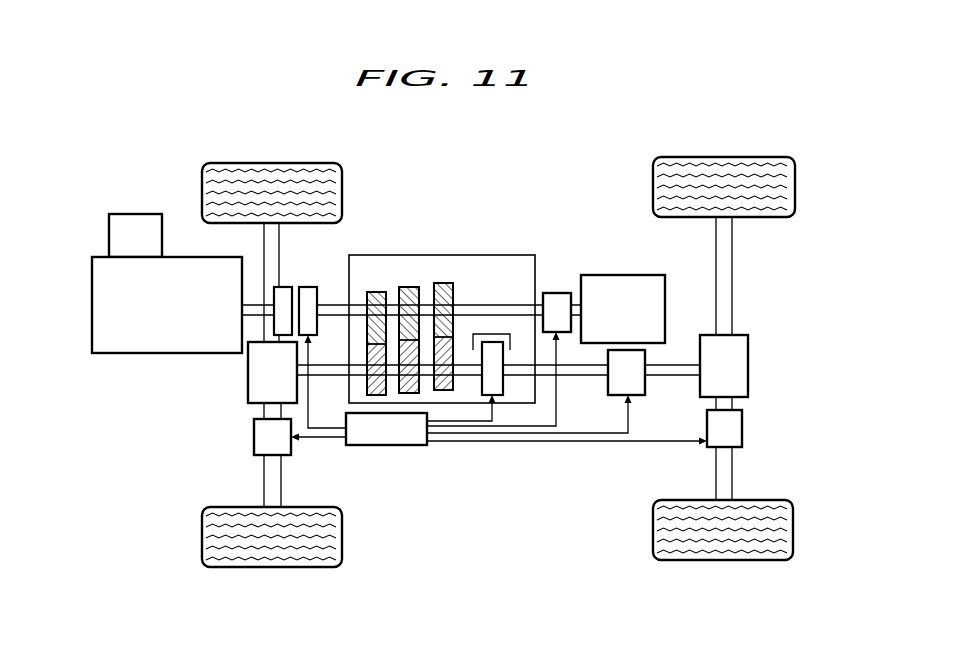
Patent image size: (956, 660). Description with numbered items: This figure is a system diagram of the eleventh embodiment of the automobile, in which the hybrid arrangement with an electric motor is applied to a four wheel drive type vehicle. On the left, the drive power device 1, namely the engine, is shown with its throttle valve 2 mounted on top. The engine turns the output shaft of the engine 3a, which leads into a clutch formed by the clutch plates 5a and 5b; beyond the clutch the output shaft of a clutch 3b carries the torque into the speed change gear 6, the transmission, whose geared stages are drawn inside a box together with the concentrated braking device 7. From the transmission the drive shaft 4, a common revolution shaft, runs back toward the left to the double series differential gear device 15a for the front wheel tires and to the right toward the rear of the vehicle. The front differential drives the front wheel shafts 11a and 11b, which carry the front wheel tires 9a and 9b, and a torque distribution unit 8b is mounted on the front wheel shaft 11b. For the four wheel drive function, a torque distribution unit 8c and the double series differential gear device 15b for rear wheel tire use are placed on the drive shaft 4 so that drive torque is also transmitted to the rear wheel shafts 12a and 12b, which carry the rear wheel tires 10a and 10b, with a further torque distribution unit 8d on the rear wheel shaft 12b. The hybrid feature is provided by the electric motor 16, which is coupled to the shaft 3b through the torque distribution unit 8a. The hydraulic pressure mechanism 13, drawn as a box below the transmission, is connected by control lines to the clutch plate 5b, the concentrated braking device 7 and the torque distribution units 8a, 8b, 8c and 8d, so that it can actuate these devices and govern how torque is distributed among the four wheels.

The drive power device 1 is at (102, 298).
The throttle valve 2 is at (111, 235).
The output shaft of the engine 3a is at (250, 308).
The output shaft of a clutch 3b is at (340, 308).
The drive shaft 4 is at (577, 373).
The clutch plate 5a is at (285, 292).
The clutch plate 5b is at (310, 292).
The speed change gear 6 is at (478, 255).
The concentrated braking device 7 is at (492, 347).
The torque distribution unit 8a is at (558, 293).
The torque distribution unit 8b is at (255, 438).
The torque distribution unit 8c is at (644, 385).
The torque distribution unit 8d is at (742, 425).
The front wheel tire 9a is at (257, 175).
The front wheel tire 9b is at (246, 548).
The rear wheel tire 10a is at (713, 172).
The rear wheel tire 10b is at (700, 545).
The front wheel shaft 11a is at (264, 242).
The front wheel shaft 11b is at (264, 473).
The rear wheel shaft 12a is at (732, 284).
The rear wheel shaft 12b is at (730, 480).
The hydraulic pressure mechanism 13 is at (378, 437).
The double series differential gear device 15a is at (250, 378).
The double series differential gear device 15b is at (748, 367).
The electric motor 16 is at (627, 283).